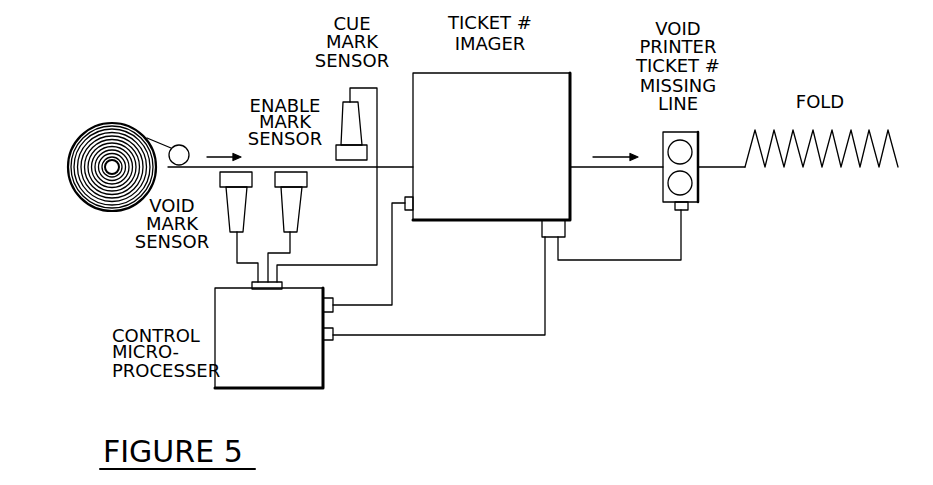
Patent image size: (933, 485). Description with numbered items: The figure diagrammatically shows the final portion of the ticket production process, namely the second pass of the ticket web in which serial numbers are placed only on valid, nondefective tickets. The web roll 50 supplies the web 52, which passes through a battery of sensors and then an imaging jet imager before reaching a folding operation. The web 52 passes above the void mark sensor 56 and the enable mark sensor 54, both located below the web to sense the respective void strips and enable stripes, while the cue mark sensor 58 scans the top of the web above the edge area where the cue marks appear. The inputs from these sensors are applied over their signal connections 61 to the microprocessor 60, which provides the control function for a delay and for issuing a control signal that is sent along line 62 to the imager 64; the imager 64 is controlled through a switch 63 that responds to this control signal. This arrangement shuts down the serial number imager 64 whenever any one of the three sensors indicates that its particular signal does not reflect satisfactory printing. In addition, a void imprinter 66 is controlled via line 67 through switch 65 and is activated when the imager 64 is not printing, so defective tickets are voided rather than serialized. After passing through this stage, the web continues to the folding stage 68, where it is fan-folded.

The web roll 50 is at (107, 106).
The web 52 is at (200, 150).
The enable mark sensor 54 is at (300, 203).
The void mark sensor 56 is at (225, 218).
The cue mark sensor 58 is at (340, 113).
The microprocessor 60 is at (250, 347).
The sensor signal lines 61 is at (301, 250).
The line 62 is at (392, 277).
The switch 63 is at (402, 210).
The imager 64 is at (473, 153).
The switch 65 is at (534, 249).
The void imprinter 66 is at (662, 145).
The line 67 is at (495, 335).
The folding stage 68 is at (783, 165).